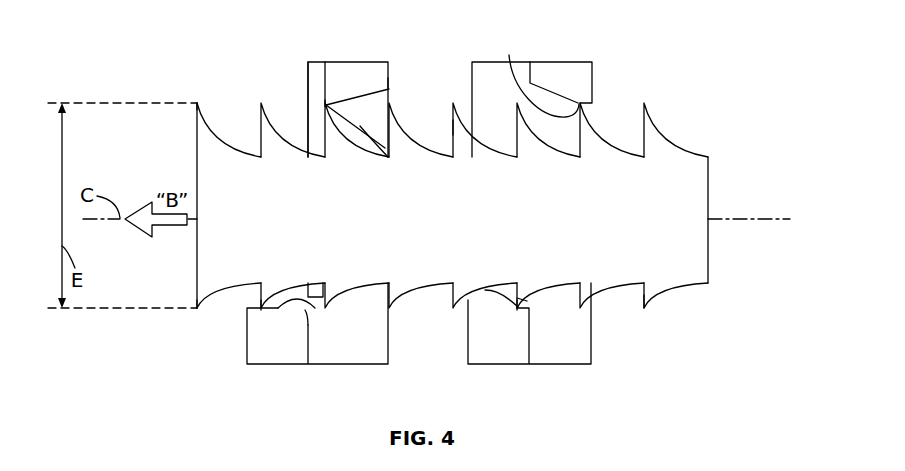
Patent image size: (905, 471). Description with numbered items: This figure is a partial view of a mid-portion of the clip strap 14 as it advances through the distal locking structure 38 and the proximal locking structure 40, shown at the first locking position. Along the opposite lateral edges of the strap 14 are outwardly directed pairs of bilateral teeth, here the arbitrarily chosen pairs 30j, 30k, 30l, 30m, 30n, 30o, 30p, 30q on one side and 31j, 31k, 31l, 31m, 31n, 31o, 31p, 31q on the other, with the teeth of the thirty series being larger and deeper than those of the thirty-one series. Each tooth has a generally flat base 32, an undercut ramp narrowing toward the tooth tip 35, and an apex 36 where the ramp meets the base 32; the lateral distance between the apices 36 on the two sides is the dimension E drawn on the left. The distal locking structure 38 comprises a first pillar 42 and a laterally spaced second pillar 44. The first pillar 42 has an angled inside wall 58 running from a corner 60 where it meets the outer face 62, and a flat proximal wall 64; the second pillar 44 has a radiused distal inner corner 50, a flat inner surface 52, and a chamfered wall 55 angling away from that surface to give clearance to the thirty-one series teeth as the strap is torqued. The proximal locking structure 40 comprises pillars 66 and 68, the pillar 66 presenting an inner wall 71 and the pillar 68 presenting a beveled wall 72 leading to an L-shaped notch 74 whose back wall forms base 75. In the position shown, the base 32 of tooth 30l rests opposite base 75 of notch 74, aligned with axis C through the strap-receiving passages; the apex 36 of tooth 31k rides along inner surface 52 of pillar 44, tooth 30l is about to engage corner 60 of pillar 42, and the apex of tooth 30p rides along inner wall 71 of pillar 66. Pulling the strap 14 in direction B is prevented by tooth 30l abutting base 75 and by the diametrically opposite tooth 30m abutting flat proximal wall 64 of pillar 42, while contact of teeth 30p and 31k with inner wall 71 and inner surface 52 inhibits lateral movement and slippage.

The strap 14 is at (493, 205).
The strap tooth 30j is at (207, 150).
The strap tooth 30k is at (271, 150).
The strap tooth 30l is at (335, 150).
The strap tooth 30m is at (399, 150).
The strap tooth 30n is at (463, 150).
The strap tooth 30o is at (527, 150).
The strap tooth 30p is at (590, 150).
The strap tooth 30q is at (654, 150).
The strap tooth 31j is at (204, 280).
The strap tooth 31k is at (268, 280).
The strap tooth 31l is at (332, 280).
The strap tooth 31m is at (396, 280).
The strap tooth 31n is at (460, 280).
The strap tooth 31o is at (524, 280).
The strap tooth 31p is at (588, 280).
The strap tooth 31q is at (652, 280).
The flat base 32 is at (452, 127).
The tooth tip 35 is at (389, 89).
The apex 36 is at (198, 100).
The distal locking structure 38 is at (305, 93).
The proximal locking structure 40 is at (610, 75).
The first pillar 42 is at (348, 109).
The second pillar 44 is at (317, 323).
The distal inner corner 50 is at (260, 312).
The flat inner surface 52 is at (310, 300).
The chamfered wall 55 is at (298, 318).
The inside wall 58 is at (363, 130).
The corner 60 is at (328, 102).
The outer face 62 is at (323, 70).
The wall 64 is at (389, 83).
The pillar 66 is at (558, 82).
The pillar 68 is at (529, 323).
The inner wall 71 is at (538, 73).
The beveled wall 72 is at (485, 290).
The notch 74 is at (527, 301).
The base 75 is at (517, 302).